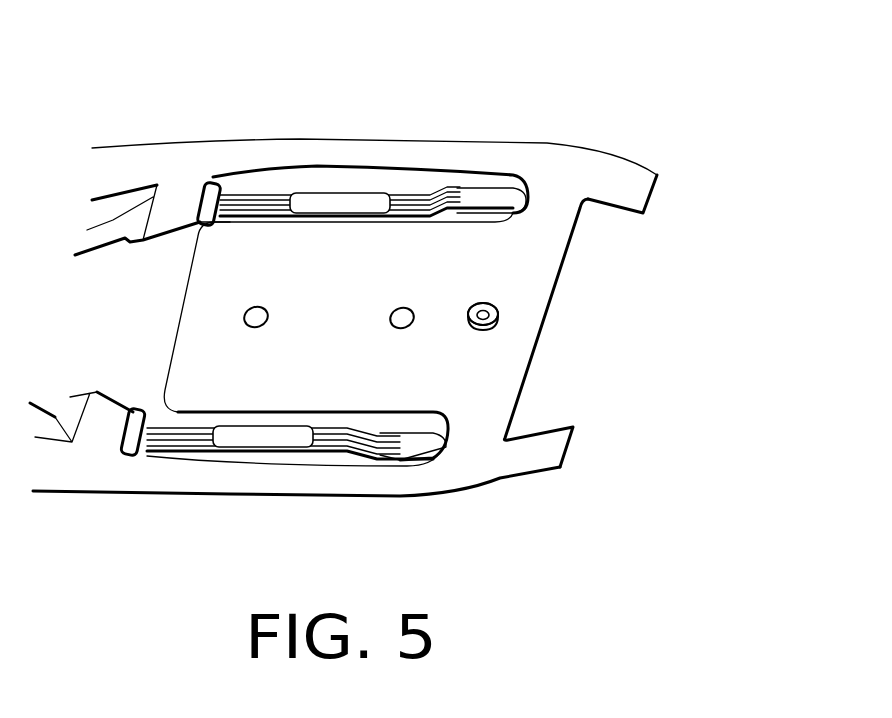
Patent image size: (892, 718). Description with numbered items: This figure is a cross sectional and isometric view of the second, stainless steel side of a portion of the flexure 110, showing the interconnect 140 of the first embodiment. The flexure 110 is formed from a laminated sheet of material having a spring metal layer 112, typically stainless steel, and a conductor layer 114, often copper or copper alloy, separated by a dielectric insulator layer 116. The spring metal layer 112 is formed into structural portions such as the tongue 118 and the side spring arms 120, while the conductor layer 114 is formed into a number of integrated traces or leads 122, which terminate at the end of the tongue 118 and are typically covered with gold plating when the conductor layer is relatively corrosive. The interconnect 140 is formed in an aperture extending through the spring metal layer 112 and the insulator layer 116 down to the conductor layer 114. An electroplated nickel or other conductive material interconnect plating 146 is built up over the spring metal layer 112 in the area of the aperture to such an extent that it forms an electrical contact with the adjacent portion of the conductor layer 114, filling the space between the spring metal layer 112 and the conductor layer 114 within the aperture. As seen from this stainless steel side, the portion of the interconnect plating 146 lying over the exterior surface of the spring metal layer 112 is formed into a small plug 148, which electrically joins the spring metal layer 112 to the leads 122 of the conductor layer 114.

The flexure 110 is at (650, 133).
The spring metal layer 112 is at (518, 357).
The conductor layer 114 is at (445, 200).
The insulator layer 116 is at (359, 200).
The tongue 118 is at (340, 338).
The side spring arms 120 is at (320, 148).
The leads 122 is at (252, 200).
The interconnect 140 is at (520, 300).
The interconnect plating 146 is at (498, 322).
The plug 148 is at (480, 330).